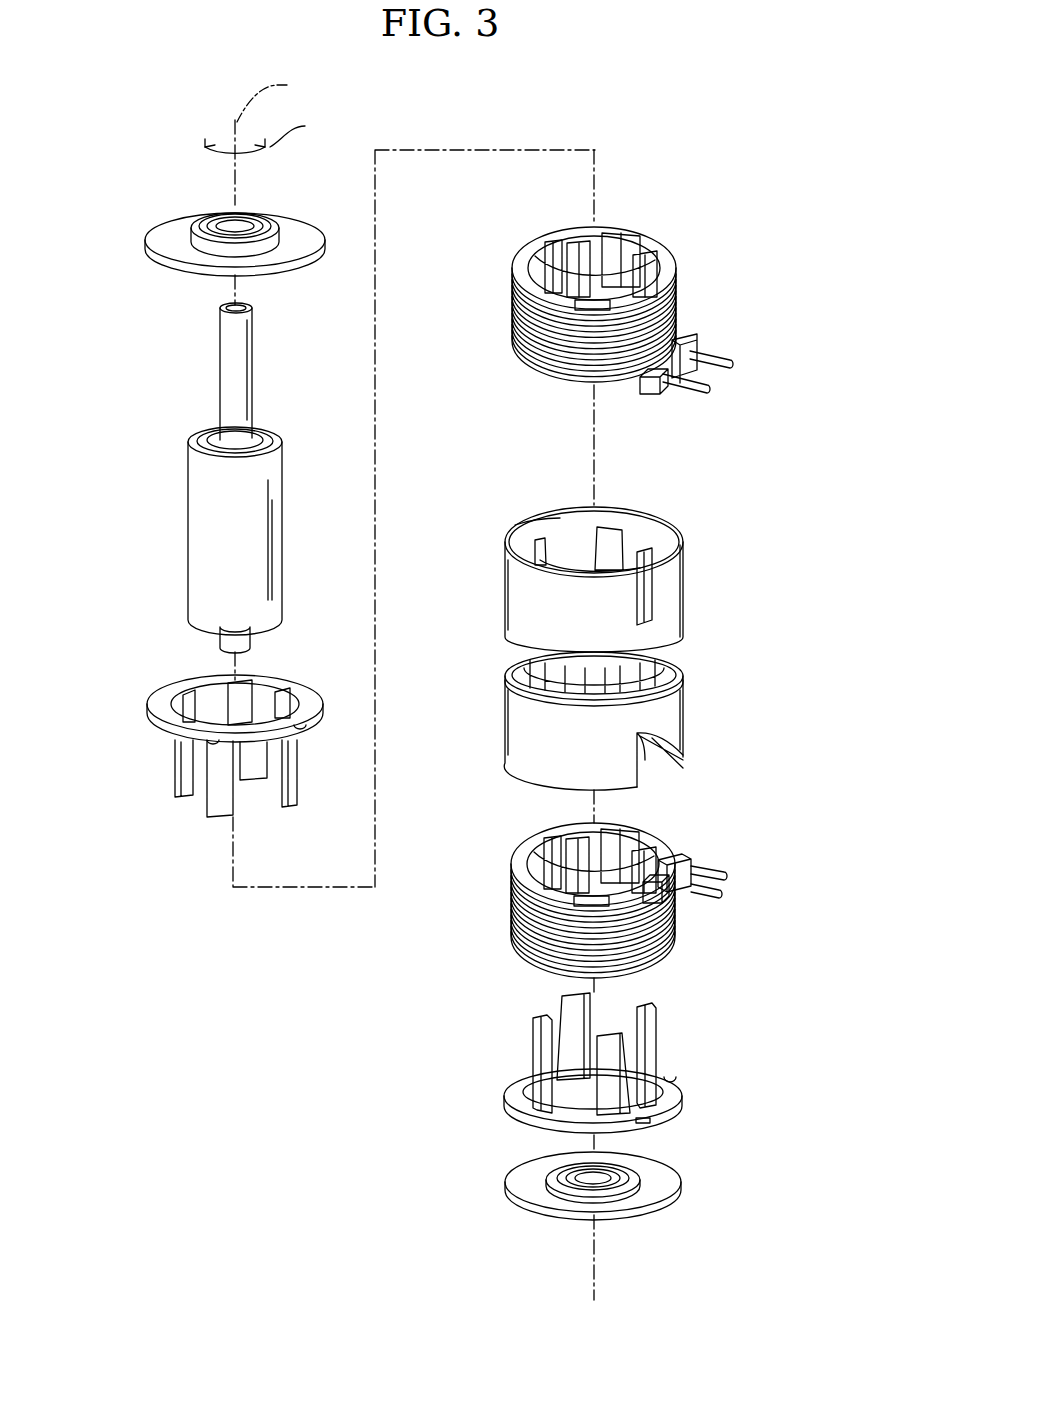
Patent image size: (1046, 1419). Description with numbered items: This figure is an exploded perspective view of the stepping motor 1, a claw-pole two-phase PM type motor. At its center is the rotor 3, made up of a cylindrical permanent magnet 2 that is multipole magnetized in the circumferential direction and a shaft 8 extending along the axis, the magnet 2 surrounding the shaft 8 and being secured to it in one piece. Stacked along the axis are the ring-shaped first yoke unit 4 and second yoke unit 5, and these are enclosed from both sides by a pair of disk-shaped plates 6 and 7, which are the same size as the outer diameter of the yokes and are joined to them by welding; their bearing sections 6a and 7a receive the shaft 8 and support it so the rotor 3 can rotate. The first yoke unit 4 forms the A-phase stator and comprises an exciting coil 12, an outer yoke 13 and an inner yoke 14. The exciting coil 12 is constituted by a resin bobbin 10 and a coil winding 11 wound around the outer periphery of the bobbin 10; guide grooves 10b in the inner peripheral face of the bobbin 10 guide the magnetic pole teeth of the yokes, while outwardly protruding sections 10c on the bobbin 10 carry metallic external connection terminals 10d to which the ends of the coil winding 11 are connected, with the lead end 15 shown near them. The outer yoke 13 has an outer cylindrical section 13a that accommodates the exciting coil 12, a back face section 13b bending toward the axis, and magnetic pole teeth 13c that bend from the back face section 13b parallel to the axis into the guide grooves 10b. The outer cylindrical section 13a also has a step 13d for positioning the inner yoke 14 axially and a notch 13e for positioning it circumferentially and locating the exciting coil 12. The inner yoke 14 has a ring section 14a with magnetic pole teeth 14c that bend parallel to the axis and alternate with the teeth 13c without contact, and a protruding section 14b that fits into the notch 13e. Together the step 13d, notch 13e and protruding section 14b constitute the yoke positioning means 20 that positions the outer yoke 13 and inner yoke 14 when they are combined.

The stepping motor 1 is at (729, 147).
The permanent magnet 2 is at (197, 488).
The rotor 3 is at (110, 410).
The first yoke unit 4 is at (862, 378).
The second yoke unit 5 is at (862, 835).
The plate 6 is at (300, 228).
The bearing section 6a is at (208, 222).
The plate 7 is at (658, 1195).
The bearing section 7a is at (565, 1195).
The shaft 8 is at (220, 390).
The bobbin 10 is at (682, 255).
The guide grooves 10b is at (566, 260).
The protruding sections 10c is at (650, 395).
The external connection terminals 10d is at (712, 392).
The coil winding 11 is at (680, 300).
The exciting coil 12 is at (735, 340).
The outer yoke 13 is at (712, 545).
The outer cylindrical section 13a is at (515, 708).
The back face section 13b is at (683, 655).
The magnetic pole teeth 13c is at (580, 572).
The step 13d is at (522, 530).
The notch 13e is at (683, 575).
The inner yoke 14 is at (318, 681).
The ring section 14a is at (158, 706).
The protruding section 14b is at (285, 752).
The magnetic pole teeth 14c is at (218, 796).
The terminal lead 15 is at (721, 868).
The yoke positioning means 20 is at (147, 744).